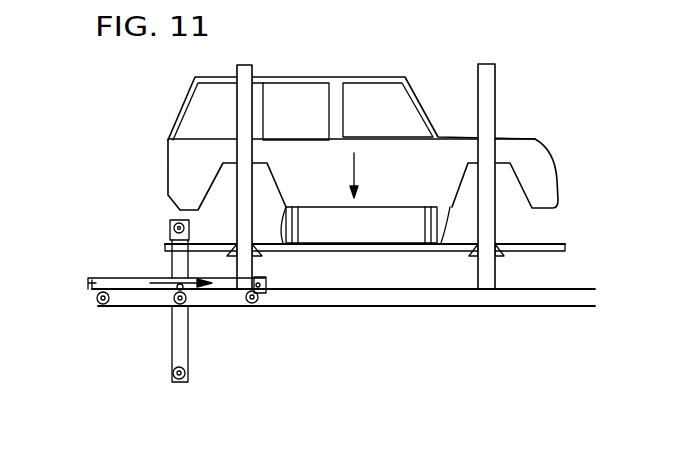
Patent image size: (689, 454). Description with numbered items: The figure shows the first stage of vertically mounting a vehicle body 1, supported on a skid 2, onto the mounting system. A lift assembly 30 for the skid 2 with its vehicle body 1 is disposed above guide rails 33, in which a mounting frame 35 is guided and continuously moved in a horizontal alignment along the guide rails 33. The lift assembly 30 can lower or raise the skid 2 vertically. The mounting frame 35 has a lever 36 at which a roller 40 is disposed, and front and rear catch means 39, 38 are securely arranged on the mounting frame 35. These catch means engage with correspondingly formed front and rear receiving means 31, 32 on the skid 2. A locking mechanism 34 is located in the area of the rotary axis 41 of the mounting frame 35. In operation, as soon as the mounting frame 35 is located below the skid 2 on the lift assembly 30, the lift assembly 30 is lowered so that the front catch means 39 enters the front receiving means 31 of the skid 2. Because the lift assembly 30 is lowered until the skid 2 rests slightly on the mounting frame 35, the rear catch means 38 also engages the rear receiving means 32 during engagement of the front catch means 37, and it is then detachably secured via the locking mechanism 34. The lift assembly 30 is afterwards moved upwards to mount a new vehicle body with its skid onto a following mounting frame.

The vehicle body 1 is at (335, 107).
The skid 2 is at (368, 252).
The lift assembly 30 is at (483, 98).
The front receiving means 31 is at (448, 207).
The rear receiving means 32 is at (288, 207).
The guide rails 33 is at (575, 306).
The locking mechanism 34 is at (176, 280).
The mounting frame 35 is at (112, 278).
The lever 36 is at (175, 338).
The front catch means 37 is at (99, 307).
The rear catch means 38 is at (92, 288).
The front catch means 39 is at (266, 284).
The roller 40 is at (172, 376).
The rotary axis 41 is at (192, 308).